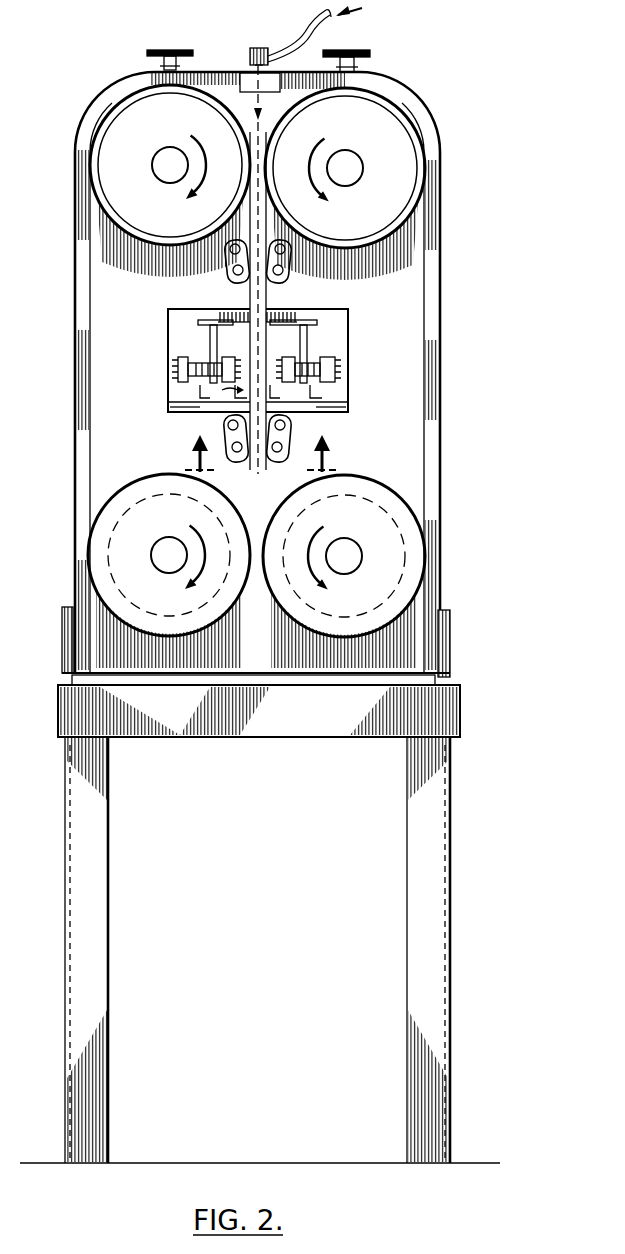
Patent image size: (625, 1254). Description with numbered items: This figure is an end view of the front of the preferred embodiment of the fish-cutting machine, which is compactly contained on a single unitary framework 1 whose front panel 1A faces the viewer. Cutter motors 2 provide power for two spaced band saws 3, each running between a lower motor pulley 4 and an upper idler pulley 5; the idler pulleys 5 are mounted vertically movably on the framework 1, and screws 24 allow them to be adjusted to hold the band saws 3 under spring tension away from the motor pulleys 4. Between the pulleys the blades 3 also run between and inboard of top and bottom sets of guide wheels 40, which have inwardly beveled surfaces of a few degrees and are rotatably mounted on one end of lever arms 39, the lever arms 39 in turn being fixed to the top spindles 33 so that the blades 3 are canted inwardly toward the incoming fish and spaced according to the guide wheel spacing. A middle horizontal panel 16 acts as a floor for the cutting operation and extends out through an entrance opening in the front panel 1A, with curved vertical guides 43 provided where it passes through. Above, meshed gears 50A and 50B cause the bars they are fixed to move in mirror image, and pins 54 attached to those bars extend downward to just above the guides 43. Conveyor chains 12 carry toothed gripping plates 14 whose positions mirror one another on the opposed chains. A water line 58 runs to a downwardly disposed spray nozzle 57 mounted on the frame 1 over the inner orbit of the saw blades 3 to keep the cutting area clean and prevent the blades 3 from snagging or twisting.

The framework 1 is at (485, 610).
The front panel 1A is at (422, 608).
The cutter motor 2 is at (108, 558).
The band saw 3 is at (250, 292).
The motor pulley 4 is at (102, 540).
The idler pulley 5 is at (110, 140).
The conveyor chain 12 is at (200, 363).
The toothed gripping plate 14 is at (330, 365).
The middle horizontal panel 16 is at (333, 405).
The screw 24 is at (172, 50).
The top spindle 33 is at (224, 240).
The lever arm 39 is at (284, 244).
The guide wheel 40 is at (290, 272).
The curved vertical guide 43 is at (200, 395).
The gear 50A is at (320, 309).
The gear 50B is at (200, 309).
The pin 54 is at (210, 343).
The spray nozzle 57 is at (255, 49).
The water line 58 is at (302, 35).